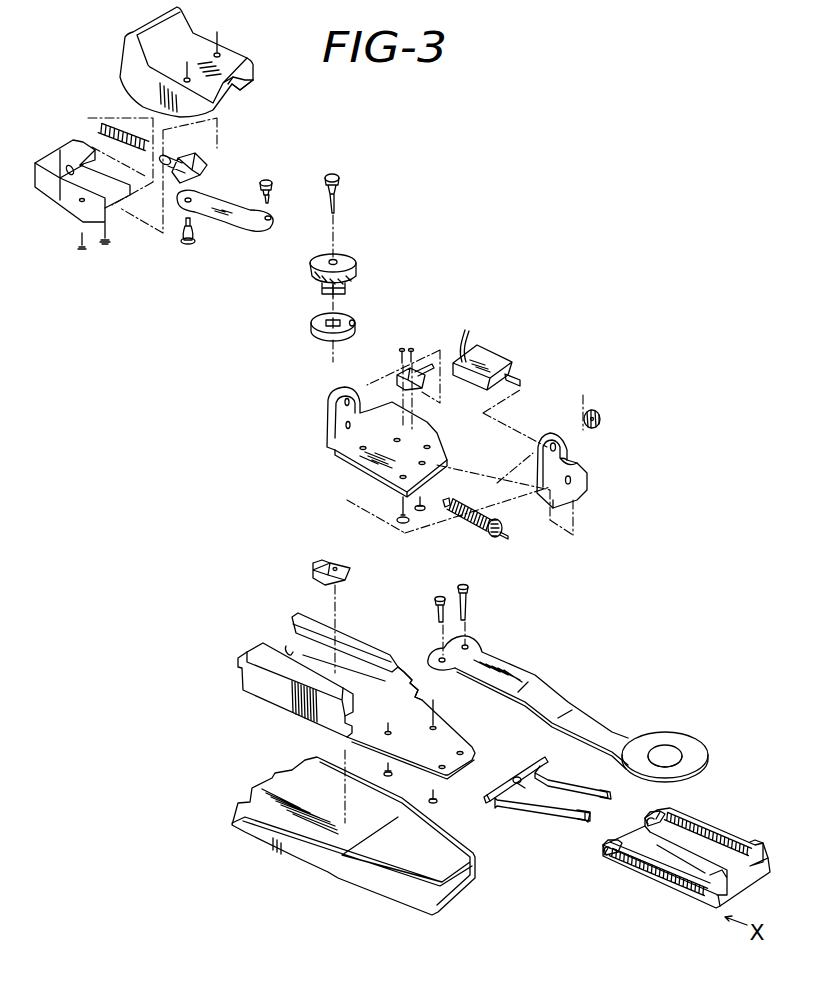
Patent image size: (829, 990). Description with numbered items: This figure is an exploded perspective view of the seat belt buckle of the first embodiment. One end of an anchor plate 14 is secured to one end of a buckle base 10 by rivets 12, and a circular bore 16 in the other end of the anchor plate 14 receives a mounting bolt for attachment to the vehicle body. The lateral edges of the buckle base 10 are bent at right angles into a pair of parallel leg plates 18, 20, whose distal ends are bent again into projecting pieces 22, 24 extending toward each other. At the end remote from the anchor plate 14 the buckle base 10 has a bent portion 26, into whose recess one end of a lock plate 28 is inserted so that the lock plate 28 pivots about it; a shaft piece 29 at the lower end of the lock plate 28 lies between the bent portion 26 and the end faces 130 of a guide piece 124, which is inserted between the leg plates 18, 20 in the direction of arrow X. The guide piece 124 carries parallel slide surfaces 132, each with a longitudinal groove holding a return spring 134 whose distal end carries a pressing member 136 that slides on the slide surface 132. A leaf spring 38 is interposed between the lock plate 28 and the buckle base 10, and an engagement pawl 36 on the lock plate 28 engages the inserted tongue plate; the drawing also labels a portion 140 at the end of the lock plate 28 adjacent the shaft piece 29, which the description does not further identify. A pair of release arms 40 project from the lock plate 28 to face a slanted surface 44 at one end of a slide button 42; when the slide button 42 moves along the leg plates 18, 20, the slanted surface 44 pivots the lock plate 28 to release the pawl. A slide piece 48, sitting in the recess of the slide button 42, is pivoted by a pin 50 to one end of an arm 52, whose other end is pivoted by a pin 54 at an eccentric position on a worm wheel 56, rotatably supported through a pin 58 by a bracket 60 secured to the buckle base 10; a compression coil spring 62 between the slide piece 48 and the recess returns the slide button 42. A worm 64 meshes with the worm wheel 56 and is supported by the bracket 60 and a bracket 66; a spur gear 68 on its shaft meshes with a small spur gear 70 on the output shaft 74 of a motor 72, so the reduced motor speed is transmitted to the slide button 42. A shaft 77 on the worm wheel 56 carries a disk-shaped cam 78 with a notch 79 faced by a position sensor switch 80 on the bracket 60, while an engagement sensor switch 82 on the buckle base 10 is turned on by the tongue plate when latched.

The buckle base 10 is at (368, 690).
The rivets 12 is at (470, 593).
The anchor plate 14 is at (603, 727).
The circular bore 16 is at (665, 745).
The leg plate 18 is at (282, 700).
The leg plate 20 is at (387, 675).
The projecting piece 22 is at (263, 648).
The projecting piece 24 is at (347, 637).
The bent portion 26 is at (286, 647).
The lock plate 28 is at (542, 822).
The shaft piece 29 is at (495, 805).
The engagement pawl 36 is at (548, 780).
The leaf spring 38 is at (517, 777).
The release arms 40 is at (577, 818).
The slide button 42 is at (237, 63).
The slanted surface 44 is at (247, 87).
The slide piece 48 is at (203, 163).
The pin 50 is at (197, 233).
The arm 52 is at (253, 230).
The pin 54 is at (270, 178).
The worm wheel 56 is at (350, 262).
The pin 58 is at (340, 190).
The bracket 60 is at (437, 450).
The compression coil spring 62 is at (110, 123).
The worm 64 is at (463, 518).
The bracket 66 is at (573, 477).
The spur gear 68 is at (493, 537).
The small spur gear 70 is at (597, 421).
The motor 72 is at (490, 350).
The output shaft 74 is at (510, 382).
The shaft 77 is at (322, 290).
The disk-shaped cam 78 is at (347, 313).
The notch 79 is at (354, 323).
The position sensor switch 80 is at (398, 370).
The engagement sensor switch 82 is at (340, 557).
The guide piece 124 is at (763, 892).
The end faces 130 is at (597, 858).
The slide surfaces 132 is at (612, 855).
The return spring 134 is at (678, 880).
The pressing member 136 is at (608, 863).
The contact notch 140 is at (487, 793).